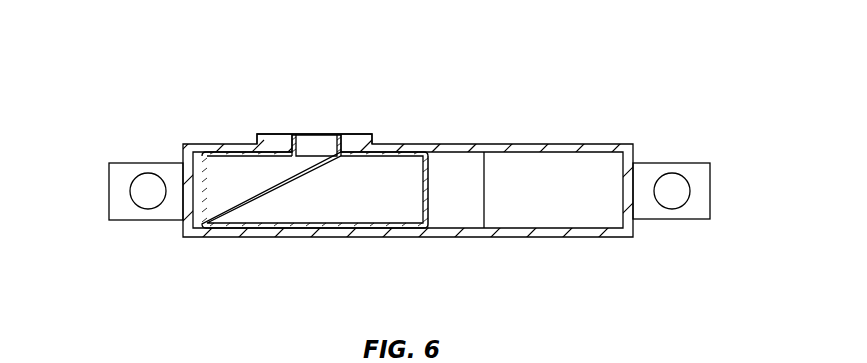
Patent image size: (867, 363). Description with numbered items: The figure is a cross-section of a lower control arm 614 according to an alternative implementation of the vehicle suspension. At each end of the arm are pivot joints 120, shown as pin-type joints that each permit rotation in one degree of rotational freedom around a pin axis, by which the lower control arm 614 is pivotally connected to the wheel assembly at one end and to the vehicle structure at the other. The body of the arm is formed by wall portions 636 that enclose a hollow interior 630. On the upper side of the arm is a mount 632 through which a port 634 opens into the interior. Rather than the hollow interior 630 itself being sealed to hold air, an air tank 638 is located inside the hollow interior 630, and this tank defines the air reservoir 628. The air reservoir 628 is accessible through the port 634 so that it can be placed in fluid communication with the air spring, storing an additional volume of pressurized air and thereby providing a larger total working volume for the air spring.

The lower control arm 614 is at (411, 145).
The air reservoir 628 is at (229, 177).
The mount 632 is at (280, 133).
The port 634 is at (330, 133).
The air tank 638 is at (436, 166).
The hollow interior 630 is at (475, 162).
The wall portions 636 is at (572, 150).
The pivot joints 120 is at (130, 190).